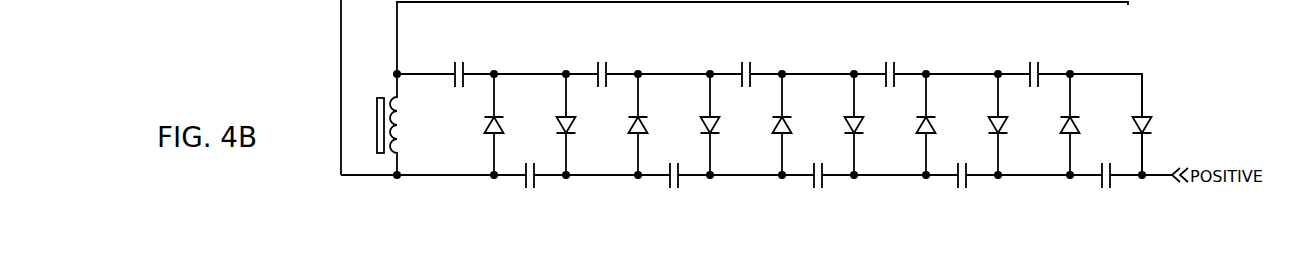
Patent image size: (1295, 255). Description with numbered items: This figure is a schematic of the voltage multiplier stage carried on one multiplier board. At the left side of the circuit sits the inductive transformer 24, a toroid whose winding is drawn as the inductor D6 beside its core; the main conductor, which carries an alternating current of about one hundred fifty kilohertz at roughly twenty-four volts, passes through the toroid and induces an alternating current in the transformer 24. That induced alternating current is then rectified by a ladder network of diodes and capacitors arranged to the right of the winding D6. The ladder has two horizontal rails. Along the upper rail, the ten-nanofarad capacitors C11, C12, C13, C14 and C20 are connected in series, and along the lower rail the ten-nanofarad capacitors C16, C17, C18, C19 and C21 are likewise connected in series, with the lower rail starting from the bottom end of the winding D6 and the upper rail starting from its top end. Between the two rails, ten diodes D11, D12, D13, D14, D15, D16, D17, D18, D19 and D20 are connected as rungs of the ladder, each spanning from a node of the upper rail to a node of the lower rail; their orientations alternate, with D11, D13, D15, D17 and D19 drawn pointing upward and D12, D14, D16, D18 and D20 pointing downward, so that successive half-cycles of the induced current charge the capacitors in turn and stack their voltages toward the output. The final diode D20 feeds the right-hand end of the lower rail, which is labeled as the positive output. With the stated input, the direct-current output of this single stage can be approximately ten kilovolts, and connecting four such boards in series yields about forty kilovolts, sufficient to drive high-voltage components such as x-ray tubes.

The inductive transformer 24 is at (339, 140).
The toroid winding D6 (100T toroid) D6 is at (376, 123).
The capacitor C11 10nF C11 is at (457, 64).
The capacitor C12 10nF C12 is at (603, 64).
The capacitor C13 10nF C13 is at (747, 64).
The capacitor C14 10nF C14 is at (891, 64).
The capacitor C16 10nF C16 is at (528, 187).
The capacitor C17 10nF C17 is at (674, 187).
The capacitor C18 10nF C18 is at (818, 187).
The capacitor C19 10nF C19 is at (962, 187).
The capacitor C20 10nF C20 is at (1035, 64).
The capacitor C21 10nF C21 is at (1106, 187).
The diode D11 is at (513, 124).
The diode D12 is at (585, 124).
The diode D13 is at (657, 124).
The diode D14 is at (728, 124).
The diode D15 is at (801, 124).
The diode D16 is at (872, 124).
The diode D17 is at (945, 124).
The diode D18 is at (1016, 124).
The diode D19 is at (1089, 124).
The diode D20 is at (1161, 124).